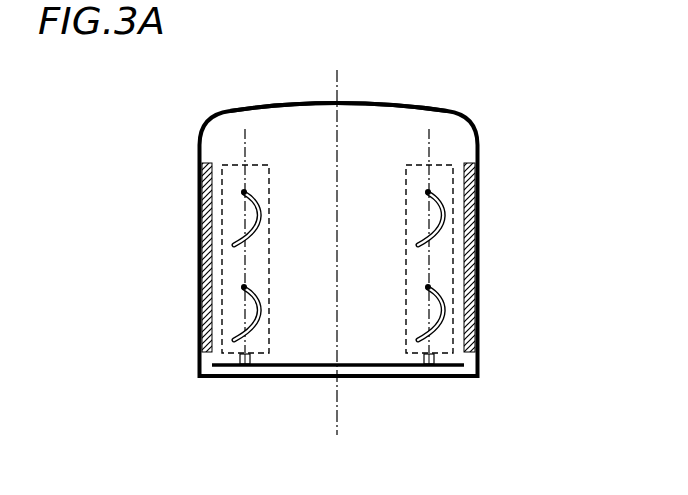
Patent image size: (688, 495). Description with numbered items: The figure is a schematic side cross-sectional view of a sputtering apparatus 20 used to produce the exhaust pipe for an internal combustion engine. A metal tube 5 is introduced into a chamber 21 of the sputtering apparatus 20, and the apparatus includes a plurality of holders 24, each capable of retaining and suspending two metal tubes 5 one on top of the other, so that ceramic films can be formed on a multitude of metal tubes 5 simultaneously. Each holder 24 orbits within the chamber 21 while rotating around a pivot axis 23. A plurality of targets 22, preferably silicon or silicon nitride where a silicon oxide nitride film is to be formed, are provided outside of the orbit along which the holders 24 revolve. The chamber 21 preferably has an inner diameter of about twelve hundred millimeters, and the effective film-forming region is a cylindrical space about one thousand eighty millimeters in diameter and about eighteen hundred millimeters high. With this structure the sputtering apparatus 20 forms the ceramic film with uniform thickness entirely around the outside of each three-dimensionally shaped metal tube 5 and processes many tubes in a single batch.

The sputtering apparatus 20 is at (563, 77).
The chamber 21 is at (228, 112).
The targets 22 is at (199, 233).
The pivot axis 23 is at (437, 356).
The holders 24 is at (258, 165).
The metal tube 5 is at (250, 206).